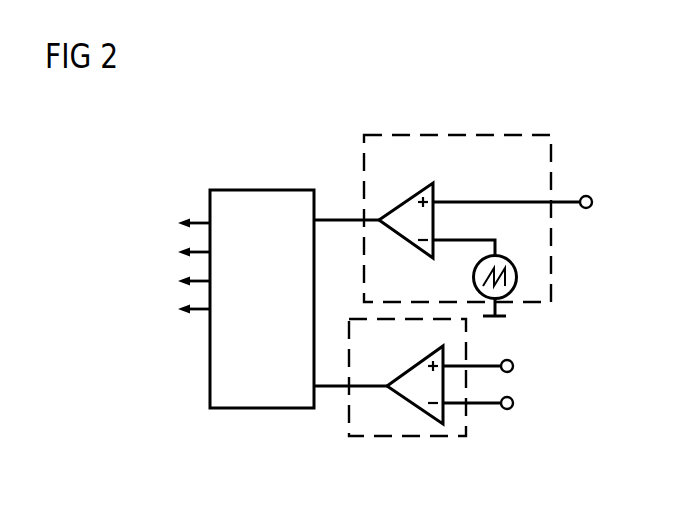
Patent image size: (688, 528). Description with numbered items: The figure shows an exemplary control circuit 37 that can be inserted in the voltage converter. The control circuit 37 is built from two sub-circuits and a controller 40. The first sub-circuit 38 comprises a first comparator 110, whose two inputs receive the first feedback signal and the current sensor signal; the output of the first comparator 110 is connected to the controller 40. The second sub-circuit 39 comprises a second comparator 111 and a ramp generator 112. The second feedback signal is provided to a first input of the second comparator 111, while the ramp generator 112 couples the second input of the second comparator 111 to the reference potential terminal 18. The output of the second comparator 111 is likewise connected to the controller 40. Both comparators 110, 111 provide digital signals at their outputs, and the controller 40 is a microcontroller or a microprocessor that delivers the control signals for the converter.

The control circuit 37 is at (276, 92).
The second sub-circuit 39 is at (474, 134).
The controller 40 is at (240, 408).
The second comparator 111 is at (402, 238).
The ramp generator 112 is at (503, 263).
The reference potential terminal 18 is at (506, 316).
The first sub-circuit 38 is at (427, 436).
The first comparator 110 is at (397, 375).